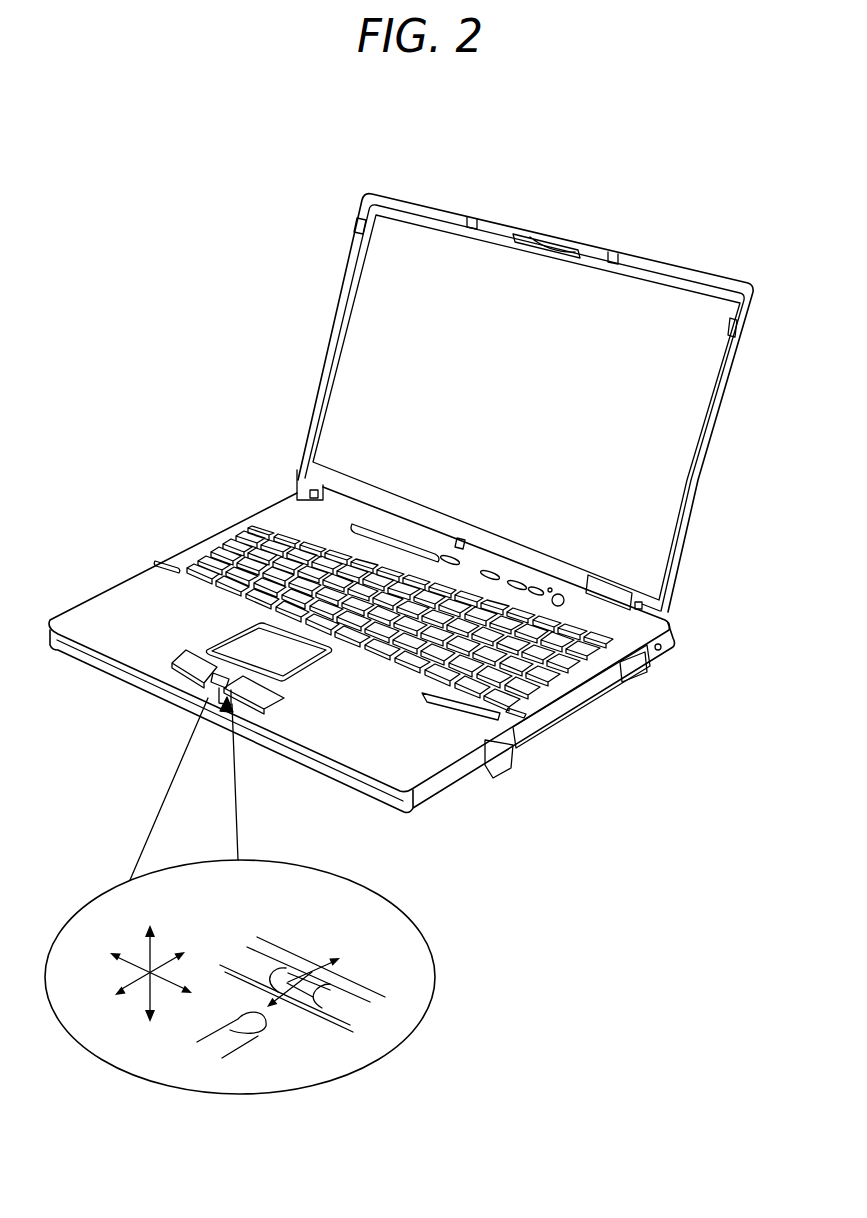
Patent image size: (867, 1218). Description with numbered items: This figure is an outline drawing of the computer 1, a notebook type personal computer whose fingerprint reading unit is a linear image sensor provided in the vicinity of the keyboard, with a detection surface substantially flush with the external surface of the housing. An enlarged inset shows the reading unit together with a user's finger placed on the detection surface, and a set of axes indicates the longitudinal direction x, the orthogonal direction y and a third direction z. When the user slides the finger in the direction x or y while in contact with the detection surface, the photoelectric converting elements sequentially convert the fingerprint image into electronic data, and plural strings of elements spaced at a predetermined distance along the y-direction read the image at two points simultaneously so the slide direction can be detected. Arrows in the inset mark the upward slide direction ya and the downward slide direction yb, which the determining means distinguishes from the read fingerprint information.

The computer 1 is at (686, 264).
The longitudinal direction x is at (167, 989).
The orthogonal direction y is at (163, 960).
The z-axis direction z is at (152, 955).
The upward slide direction ya is at (336, 958).
The downward slide direction yb is at (292, 1008).